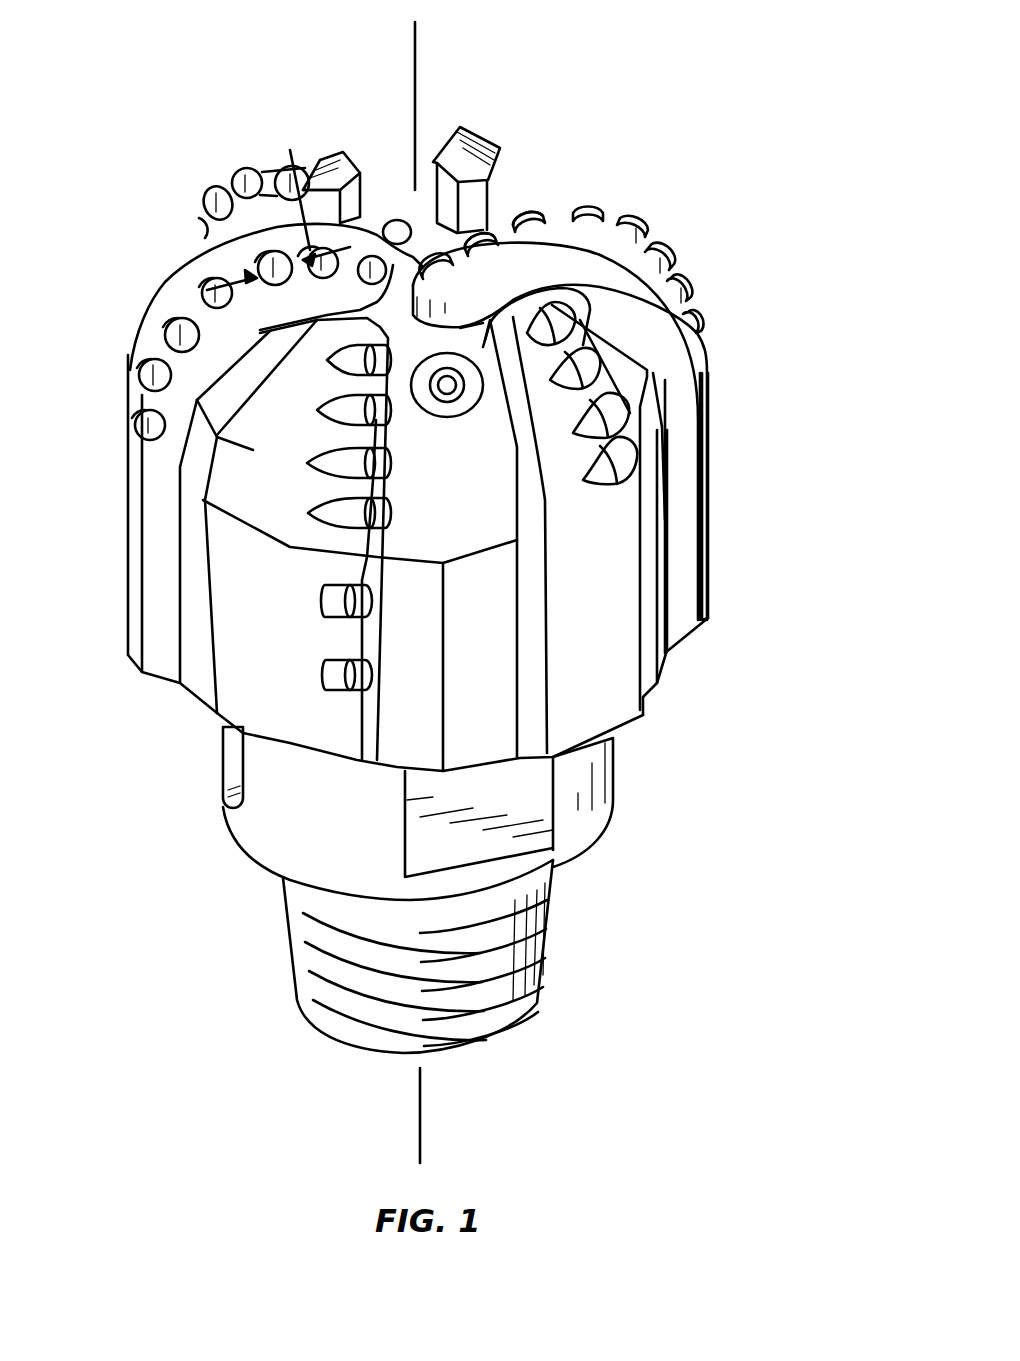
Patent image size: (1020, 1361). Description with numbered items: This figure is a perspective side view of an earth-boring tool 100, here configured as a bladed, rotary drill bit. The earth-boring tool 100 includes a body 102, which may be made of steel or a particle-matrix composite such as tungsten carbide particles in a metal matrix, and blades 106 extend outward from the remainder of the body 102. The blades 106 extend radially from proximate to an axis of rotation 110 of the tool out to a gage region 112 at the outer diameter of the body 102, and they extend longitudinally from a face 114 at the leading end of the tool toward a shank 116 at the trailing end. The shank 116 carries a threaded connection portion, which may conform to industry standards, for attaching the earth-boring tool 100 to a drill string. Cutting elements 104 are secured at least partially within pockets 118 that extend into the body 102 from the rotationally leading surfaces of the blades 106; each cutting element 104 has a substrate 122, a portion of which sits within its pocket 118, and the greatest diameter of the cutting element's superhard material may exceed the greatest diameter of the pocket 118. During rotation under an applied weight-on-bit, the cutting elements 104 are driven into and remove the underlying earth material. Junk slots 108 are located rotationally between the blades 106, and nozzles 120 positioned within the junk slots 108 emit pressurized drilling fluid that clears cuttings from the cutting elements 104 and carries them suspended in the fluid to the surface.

The earth-boring tool 100 is at (674, 151).
The body 102 is at (477, 697).
The cutting element 104 is at (150, 412).
The blades 106 is at (340, 168).
The junk slots 108 is at (483, 590).
The axis of rotation 110 is at (415, 72).
The gage region 112 is at (128, 500).
The face 114 is at (480, 262).
The shank 116 is at (547, 963).
The pockets 118 is at (210, 292).
The nozzles 120 is at (450, 390).
The substrate 122 is at (530, 222).